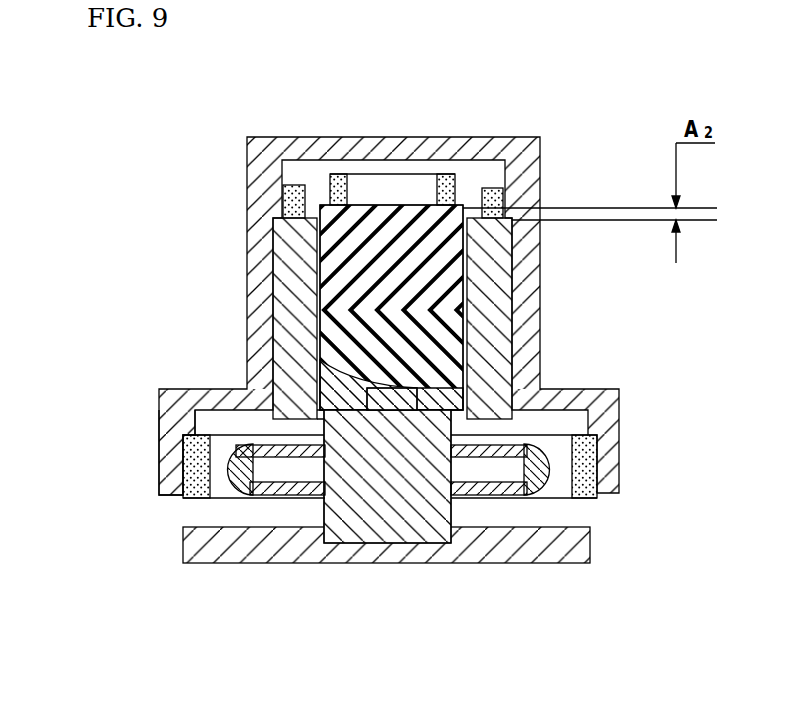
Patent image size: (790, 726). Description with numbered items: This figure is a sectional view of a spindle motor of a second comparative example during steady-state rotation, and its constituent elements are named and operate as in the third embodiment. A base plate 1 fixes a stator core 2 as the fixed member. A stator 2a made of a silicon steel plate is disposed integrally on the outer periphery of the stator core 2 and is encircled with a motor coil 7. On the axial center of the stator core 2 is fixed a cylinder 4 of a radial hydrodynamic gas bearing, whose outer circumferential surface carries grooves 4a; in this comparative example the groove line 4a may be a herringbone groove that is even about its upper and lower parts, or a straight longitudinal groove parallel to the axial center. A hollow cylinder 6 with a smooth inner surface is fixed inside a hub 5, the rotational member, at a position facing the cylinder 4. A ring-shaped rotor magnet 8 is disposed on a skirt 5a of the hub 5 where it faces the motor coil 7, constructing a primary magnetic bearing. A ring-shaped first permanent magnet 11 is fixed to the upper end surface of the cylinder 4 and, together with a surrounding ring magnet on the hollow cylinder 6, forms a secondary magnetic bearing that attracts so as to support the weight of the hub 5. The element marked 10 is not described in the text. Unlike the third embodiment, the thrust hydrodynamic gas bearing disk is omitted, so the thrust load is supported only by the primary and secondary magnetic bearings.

The base plate 1 is at (312, 543).
The stator core 2 is at (411, 523).
The stator 2a is at (240, 490).
The cylinder 4 is at (443, 228).
The spiral grooves 4a is at (430, 327).
The hub 5 is at (262, 168).
The skirt 5a is at (170, 488).
The hollow cylinder 6 is at (297, 290).
The motor coil 7 is at (283, 448).
The rotor magnet 8 is at (182, 448).
The inner spacer 10 is at (450, 174).
The first permanent magnet 11 is at (293, 187).